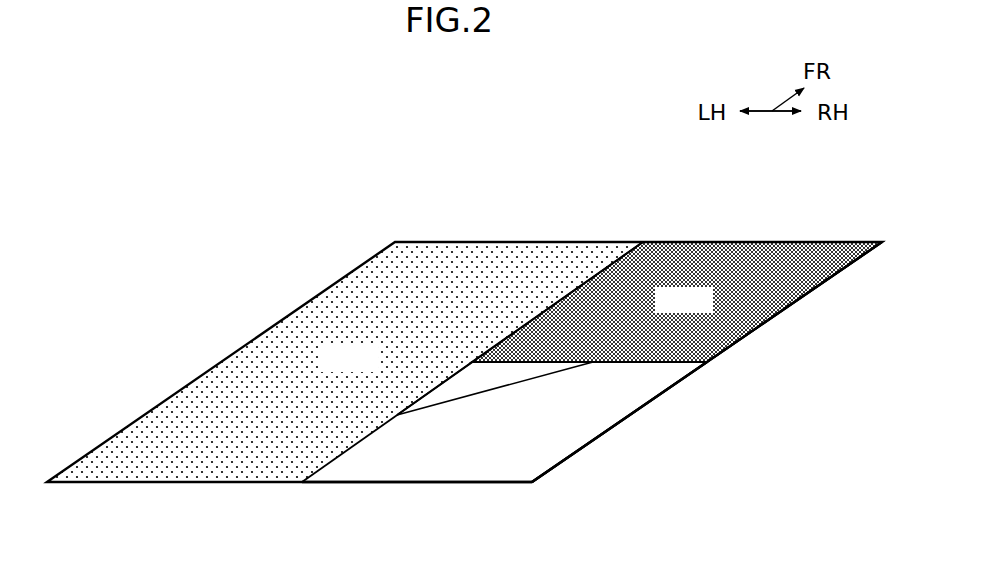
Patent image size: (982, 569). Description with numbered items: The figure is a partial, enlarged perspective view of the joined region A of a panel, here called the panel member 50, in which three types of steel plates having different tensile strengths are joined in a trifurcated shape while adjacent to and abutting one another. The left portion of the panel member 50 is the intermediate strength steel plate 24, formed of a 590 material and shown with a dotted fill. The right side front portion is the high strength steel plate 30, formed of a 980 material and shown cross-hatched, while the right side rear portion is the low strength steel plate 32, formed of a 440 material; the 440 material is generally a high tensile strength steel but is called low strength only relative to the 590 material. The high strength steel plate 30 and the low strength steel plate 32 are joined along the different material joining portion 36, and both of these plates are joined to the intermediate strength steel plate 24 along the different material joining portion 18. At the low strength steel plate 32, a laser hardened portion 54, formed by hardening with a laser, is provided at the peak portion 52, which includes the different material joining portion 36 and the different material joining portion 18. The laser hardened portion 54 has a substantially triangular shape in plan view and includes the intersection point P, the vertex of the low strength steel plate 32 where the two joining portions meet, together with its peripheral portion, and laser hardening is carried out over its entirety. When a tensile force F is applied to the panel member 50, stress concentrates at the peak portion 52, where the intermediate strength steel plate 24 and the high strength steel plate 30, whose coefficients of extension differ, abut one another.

The different material joining portion 18 is at (341, 458).
The intermediate strength steel plate 24 is at (250, 353).
The high strength steel plate 30 is at (803, 278).
The low strength steel plate 32 is at (583, 422).
The different material joining portion 36 is at (662, 362).
The panel member 50 is at (759, 242).
The peak portion 52 is at (446, 383).
The laser hardened portion 54 is at (427, 411).
The 440 material 440 is at (417, 452).
The 590 material 590 is at (345, 362).
The 980 material 980 is at (684, 300).
The joined region A is at (330, 236).
The intersection point P is at (464, 368).
The tensile force F is at (48, 376).